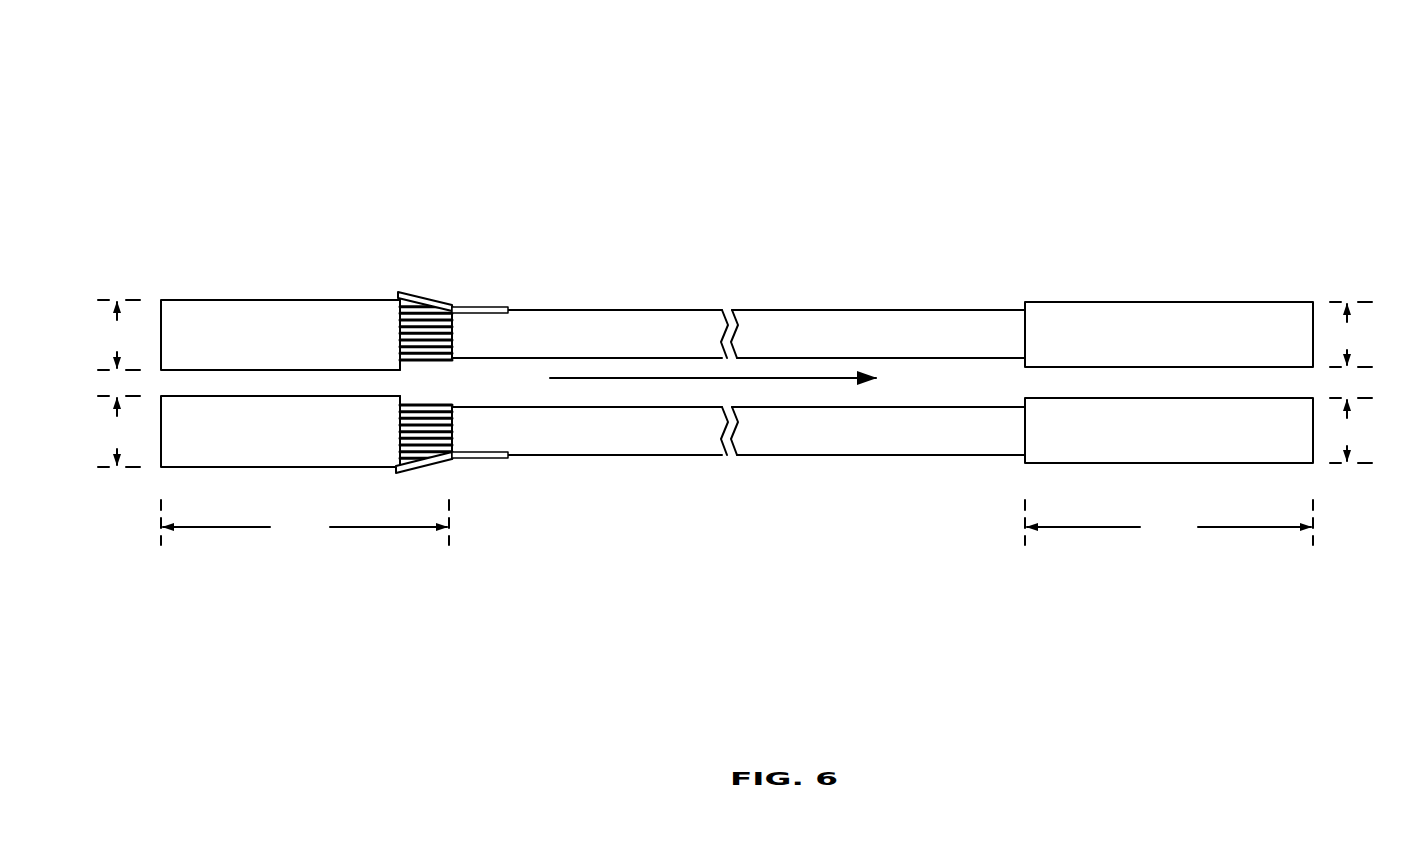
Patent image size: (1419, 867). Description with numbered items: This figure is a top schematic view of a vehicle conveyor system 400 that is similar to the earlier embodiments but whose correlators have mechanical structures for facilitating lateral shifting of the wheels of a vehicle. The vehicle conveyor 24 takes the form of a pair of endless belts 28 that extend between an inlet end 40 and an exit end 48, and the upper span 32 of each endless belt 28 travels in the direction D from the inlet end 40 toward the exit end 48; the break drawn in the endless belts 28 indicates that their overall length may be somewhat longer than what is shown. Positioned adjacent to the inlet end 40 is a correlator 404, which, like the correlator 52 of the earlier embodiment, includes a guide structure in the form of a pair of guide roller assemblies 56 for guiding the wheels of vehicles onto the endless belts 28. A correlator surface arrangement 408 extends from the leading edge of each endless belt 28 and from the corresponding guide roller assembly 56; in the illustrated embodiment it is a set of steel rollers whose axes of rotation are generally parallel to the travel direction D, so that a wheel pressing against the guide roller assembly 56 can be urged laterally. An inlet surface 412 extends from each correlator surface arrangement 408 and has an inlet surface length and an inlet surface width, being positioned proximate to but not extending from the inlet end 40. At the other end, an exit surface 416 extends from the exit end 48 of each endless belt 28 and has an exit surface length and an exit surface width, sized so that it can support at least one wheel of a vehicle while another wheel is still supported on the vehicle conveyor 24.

The vehicle conveyor system 400 is at (378, 150).
The vehicle conveyor 24 is at (738, 356).
The endless belts 28 is at (613, 323).
The upper span 32 is at (895, 326).
The inlet end 40 is at (474, 325).
The exit end 48 is at (1001, 326).
The correlator 52 is at (372, 486).
The guide roller assembly 56 is at (421, 296).
The correlator 404 is at (420, 363).
The correlator surface arrangement 408 is at (417, 417).
The inlet surface 412 is at (173, 320).
The exit surface 416 is at (1266, 323).